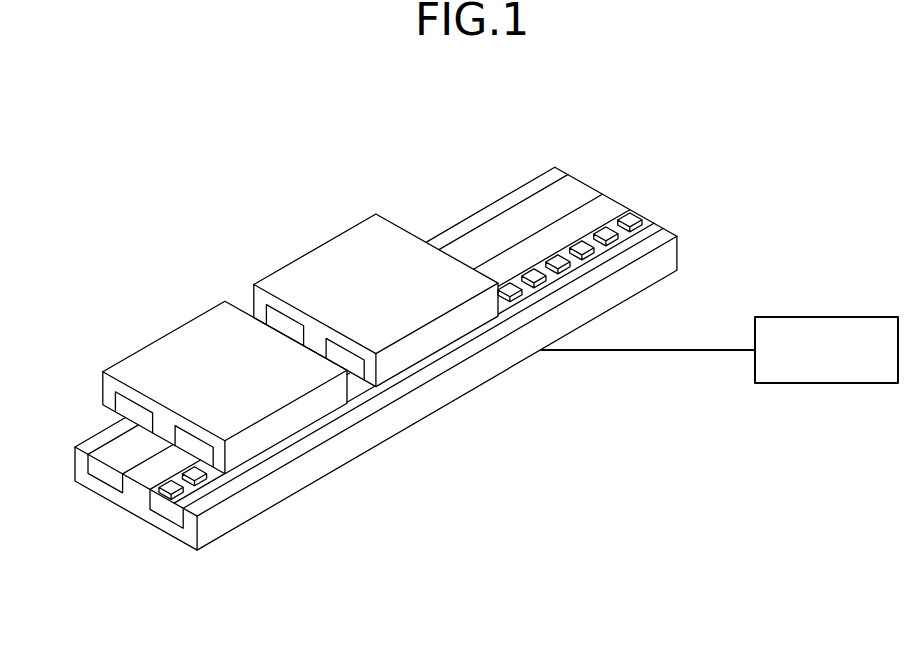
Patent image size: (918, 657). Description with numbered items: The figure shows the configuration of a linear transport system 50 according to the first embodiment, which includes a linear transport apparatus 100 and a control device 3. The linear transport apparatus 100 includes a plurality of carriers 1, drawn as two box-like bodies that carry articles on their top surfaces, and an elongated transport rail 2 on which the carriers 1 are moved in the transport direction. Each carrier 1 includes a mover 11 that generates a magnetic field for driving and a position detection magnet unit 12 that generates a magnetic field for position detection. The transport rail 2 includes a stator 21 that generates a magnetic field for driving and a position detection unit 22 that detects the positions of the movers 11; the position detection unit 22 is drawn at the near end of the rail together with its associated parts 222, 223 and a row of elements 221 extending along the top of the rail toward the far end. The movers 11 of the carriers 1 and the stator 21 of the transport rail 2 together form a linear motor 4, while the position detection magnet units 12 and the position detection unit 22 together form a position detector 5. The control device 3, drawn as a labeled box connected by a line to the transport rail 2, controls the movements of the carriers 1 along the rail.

The linear transport apparatus 100 is at (158, 117).
The linear transport system 50 is at (393, 148).
The carrier 1 is at (203, 323).
The mover 11 is at (133, 407).
The linear motor 4 is at (100, 480).
The position detection magnet unit 12 is at (203, 450).
The position detector 5 is at (168, 510).
The transport rail 2 is at (380, 422).
The stator 21 is at (85, 519).
The position detection unit 22 is at (138, 544).
The sensor element 222 is at (171, 490).
The sensor element 223 is at (194, 476).
The sensor row 221 is at (627, 240).
The control device 3 is at (827, 316).